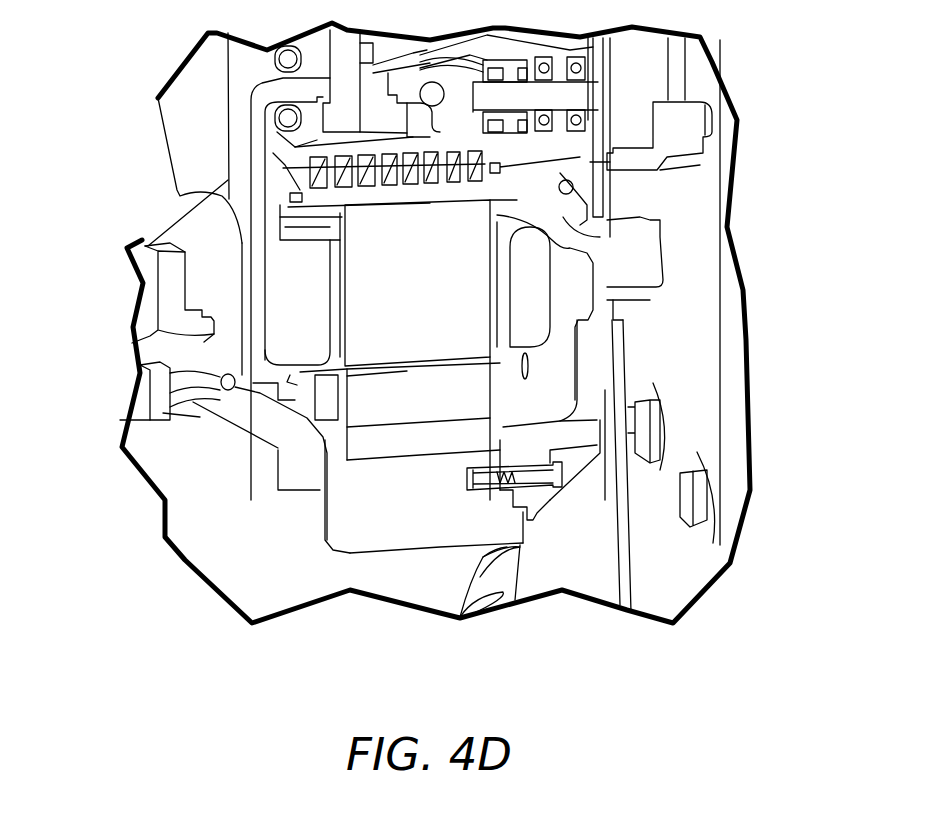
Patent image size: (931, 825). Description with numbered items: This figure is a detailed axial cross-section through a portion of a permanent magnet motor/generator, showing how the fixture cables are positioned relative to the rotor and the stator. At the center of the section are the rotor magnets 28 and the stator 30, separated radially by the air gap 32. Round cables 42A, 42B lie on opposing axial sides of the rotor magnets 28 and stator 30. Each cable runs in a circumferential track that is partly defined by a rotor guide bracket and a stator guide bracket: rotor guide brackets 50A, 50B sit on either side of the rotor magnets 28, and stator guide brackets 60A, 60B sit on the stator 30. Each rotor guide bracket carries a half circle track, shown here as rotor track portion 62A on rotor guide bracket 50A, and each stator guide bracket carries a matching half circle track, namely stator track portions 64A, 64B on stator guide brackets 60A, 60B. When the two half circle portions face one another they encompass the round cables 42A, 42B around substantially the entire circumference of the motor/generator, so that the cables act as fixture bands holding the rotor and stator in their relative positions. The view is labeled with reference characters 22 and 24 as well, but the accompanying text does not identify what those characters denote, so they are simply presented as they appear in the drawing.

The housing 22 is at (436, 323).
The actuator assembly 24 is at (287, 166).
The rotor magnets 28 is at (377, 447).
The stator 30 is at (424, 328).
The air gap 32 is at (407, 371).
The cable 42A is at (220, 380).
The cable 42B is at (573, 189).
The rotor guide bracket 50A is at (272, 413).
The rotor guide bracket 50B is at (603, 242).
The stator guide bracket 60A is at (240, 250).
The stator guide bracket 60B is at (568, 158).
The rotor track portion 62A is at (225, 403).
The stator track portion 64A is at (222, 345).
The stator track portion 64B is at (575, 192).